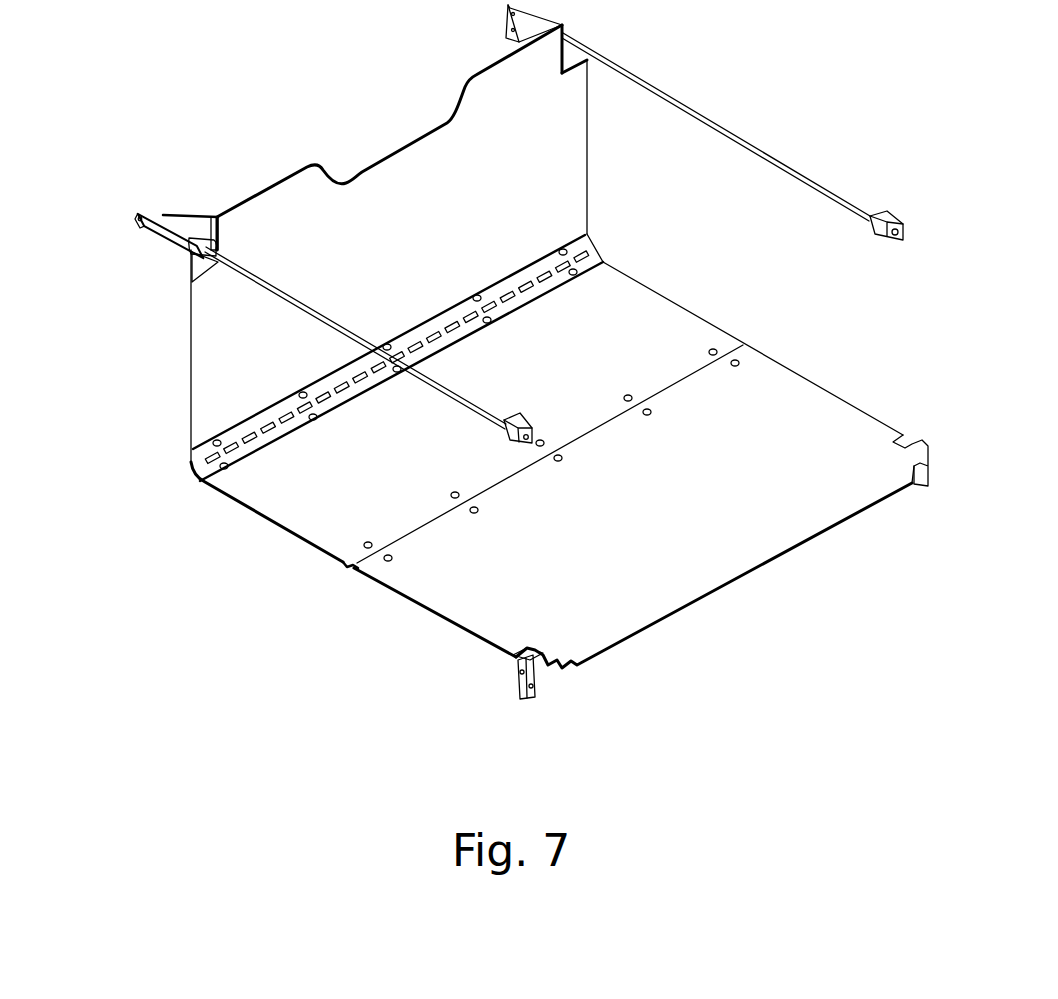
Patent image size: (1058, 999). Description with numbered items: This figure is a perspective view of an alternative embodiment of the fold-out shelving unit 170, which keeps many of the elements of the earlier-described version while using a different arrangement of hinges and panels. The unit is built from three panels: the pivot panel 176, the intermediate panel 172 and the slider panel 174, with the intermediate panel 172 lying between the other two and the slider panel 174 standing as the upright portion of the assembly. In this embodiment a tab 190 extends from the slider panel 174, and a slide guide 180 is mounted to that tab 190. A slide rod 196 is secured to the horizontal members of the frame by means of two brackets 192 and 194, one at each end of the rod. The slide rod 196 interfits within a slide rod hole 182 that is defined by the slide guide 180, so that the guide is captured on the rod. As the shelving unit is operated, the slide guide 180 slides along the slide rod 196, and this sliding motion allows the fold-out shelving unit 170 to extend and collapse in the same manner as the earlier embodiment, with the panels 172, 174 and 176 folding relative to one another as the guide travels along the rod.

The fold-out shelving unit 170 is at (258, 587).
The intermediate panel 172 is at (643, 327).
The slider panel 174 is at (552, 170).
The pivot panel 176 is at (787, 402).
The slide guide 180 is at (165, 243).
The slide rod hole 182 is at (193, 257).
The tab 190 is at (192, 217).
The bracket 192 is at (870, 213).
The bracket 194 is at (140, 228).
The slide rod 196 is at (733, 135).